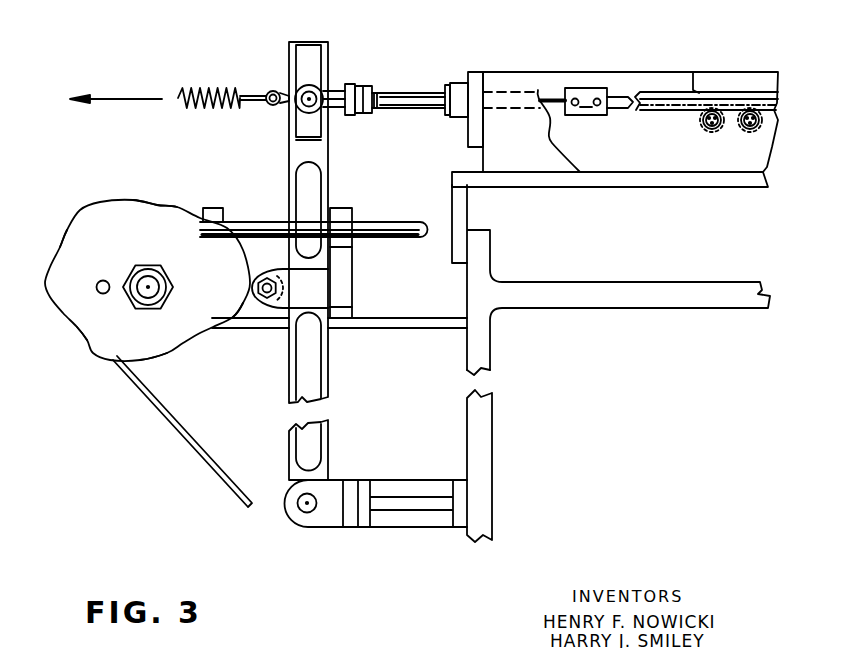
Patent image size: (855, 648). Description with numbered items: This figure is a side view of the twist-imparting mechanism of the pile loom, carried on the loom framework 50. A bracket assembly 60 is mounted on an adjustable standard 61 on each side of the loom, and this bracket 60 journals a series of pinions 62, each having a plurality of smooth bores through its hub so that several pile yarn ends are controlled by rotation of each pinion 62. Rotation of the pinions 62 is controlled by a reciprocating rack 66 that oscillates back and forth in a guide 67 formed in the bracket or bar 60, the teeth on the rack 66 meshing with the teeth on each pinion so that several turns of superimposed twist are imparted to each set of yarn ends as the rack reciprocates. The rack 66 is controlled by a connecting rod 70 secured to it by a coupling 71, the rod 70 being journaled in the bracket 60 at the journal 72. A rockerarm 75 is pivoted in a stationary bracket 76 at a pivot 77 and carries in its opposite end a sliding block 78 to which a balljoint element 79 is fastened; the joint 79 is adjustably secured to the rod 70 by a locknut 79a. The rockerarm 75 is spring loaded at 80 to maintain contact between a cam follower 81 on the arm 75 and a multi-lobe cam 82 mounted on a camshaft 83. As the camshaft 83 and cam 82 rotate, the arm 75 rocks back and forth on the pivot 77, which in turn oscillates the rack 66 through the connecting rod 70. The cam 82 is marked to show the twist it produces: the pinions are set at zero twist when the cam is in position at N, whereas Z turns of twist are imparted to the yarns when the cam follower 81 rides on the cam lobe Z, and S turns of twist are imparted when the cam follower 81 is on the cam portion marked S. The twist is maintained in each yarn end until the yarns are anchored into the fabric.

The framework 50 is at (662, 314).
The bracket assembly 60 is at (545, 180).
The adjustable standard 61 is at (453, 252).
The pinions 62 is at (712, 128).
The reciprocating rack 66 is at (658, 98).
The guide 67 is at (723, 85).
The connecting rod 70 is at (417, 90).
The coupling 71 is at (585, 92).
The journal 72 is at (457, 112).
The rockerarm 75 is at (320, 440).
The stationary bracket 76 is at (358, 480).
The pivot 77 is at (302, 507).
The sliding block 78 is at (317, 70).
The balljoint element 79 is at (330, 92).
The locknut 79a is at (363, 113).
The spring loading 80 is at (212, 87).
The cam follower 81 is at (258, 279).
The multi-lobe cam 82 is at (62, 292).
The camshaft 83 is at (153, 293).
The cam portion S is at (175, 340).
The cam position N is at (157, 205).
The cam lobe Z is at (62, 237).